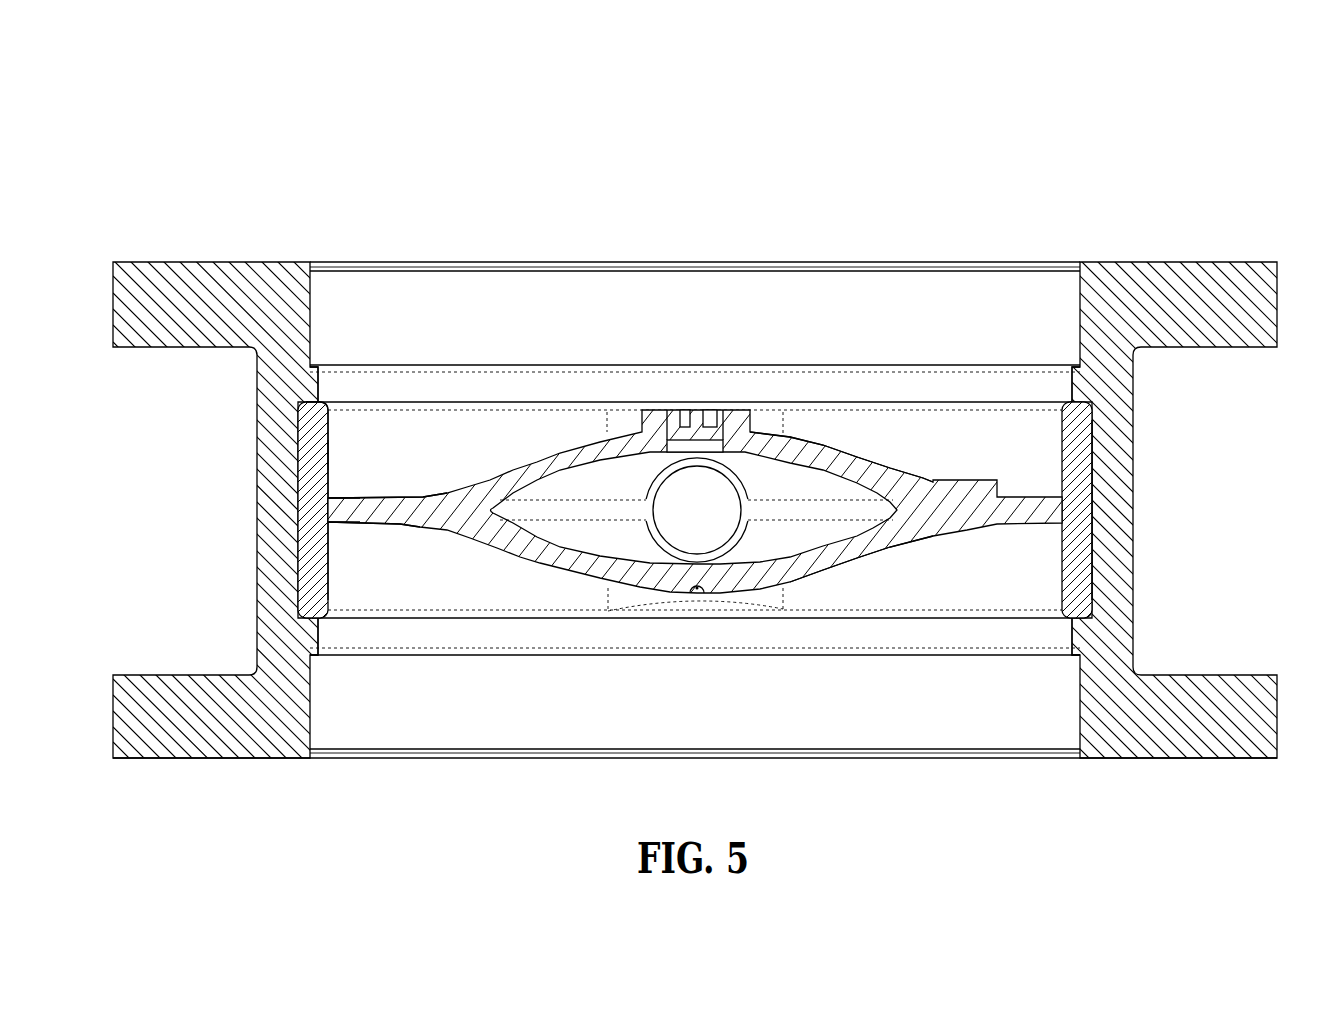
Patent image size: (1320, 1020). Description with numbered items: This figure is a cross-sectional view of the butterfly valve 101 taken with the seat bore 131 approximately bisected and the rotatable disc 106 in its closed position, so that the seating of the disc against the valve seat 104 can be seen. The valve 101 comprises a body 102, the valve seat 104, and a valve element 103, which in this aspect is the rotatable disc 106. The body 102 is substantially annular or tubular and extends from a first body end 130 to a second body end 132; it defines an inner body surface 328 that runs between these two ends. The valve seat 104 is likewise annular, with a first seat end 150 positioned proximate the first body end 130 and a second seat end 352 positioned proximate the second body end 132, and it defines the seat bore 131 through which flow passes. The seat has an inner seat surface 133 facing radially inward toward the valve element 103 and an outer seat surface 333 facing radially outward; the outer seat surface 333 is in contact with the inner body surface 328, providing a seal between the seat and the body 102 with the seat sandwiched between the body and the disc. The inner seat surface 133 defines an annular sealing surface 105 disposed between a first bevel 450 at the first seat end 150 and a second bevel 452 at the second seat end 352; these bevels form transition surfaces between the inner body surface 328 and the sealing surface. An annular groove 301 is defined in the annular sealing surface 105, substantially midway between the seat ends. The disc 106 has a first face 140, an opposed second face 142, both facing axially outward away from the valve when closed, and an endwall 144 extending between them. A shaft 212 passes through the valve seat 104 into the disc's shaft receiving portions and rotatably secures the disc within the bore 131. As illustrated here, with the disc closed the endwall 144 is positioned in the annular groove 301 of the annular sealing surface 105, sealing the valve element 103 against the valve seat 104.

The valve 101 is at (179, 122).
The seat bore 131 is at (743, 196).
The second body end 132 is at (193, 262).
The first body end 130 is at (247, 758).
The body 102 is at (1103, 287).
The inner body surface 328 is at (1080, 718).
The second bevel 452 is at (1060, 403).
The second seat end 352 is at (300, 405).
The first bevel 450 is at (327, 612).
The first seat end 150 is at (1068, 623).
The outer seat surface 333 is at (312, 435).
The inner seat surface 133 is at (330, 437).
The annular sealing surface 105 is at (328, 452).
The endwall 144 is at (1066, 508).
The valve seat 104 is at (1092, 567).
The valve element 103 is at (558, 462).
The rotatable disc 106 is at (415, 517).
The annular groove 301 is at (320, 507).
The second face 142 is at (857, 458).
The first face 140 is at (873, 562).
The shaft 212 is at (717, 495).